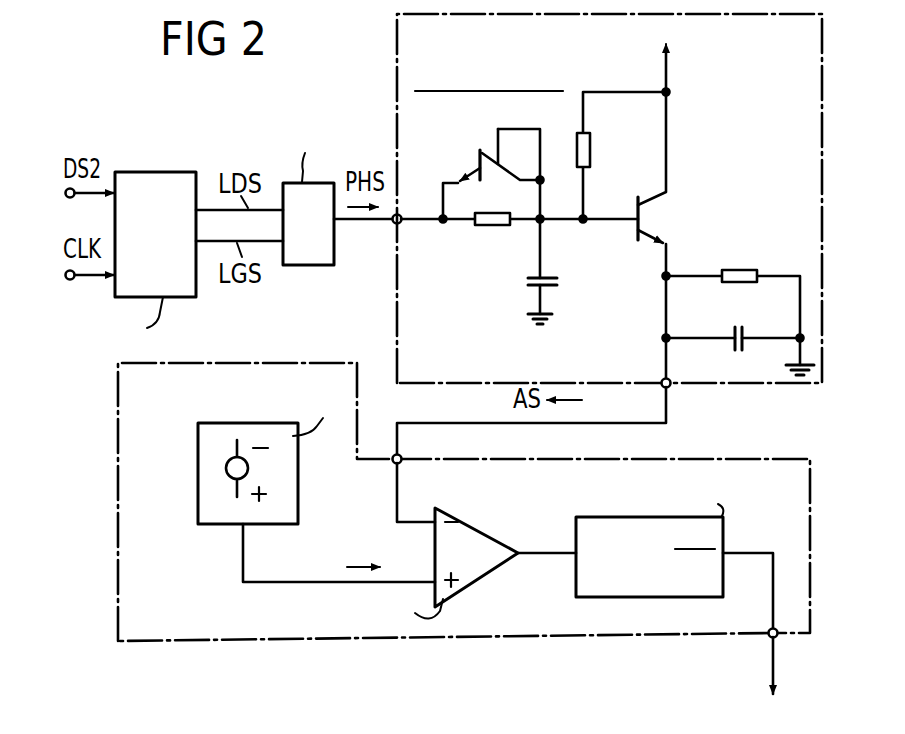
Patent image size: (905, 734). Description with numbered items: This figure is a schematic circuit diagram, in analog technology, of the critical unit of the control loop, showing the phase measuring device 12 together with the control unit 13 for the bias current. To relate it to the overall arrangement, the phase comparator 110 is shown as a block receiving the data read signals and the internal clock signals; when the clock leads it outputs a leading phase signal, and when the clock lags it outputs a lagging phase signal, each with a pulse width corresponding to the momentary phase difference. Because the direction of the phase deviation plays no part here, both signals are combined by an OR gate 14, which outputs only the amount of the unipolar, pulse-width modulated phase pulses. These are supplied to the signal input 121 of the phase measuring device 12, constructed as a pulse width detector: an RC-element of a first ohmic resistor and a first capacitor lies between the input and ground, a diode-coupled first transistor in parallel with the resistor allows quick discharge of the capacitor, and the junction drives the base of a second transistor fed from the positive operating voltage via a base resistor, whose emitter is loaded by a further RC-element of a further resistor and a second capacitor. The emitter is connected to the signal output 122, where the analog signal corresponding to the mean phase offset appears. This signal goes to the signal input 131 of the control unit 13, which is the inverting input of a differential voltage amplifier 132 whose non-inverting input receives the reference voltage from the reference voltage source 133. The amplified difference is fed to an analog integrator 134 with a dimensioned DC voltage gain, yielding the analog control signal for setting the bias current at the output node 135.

The phase measuring device 12 is at (396, 58).
The control unit 13 is at (172, 642).
The OR gate 14 is at (319, 266).
The phase comparator 110 is at (145, 172).
The signal input 121 is at (393, 225).
The signal output 122 is at (665, 378).
The signal input 131 is at (393, 465).
The differential voltage amplifier 132 is at (483, 529).
The reference voltage source 133 is at (206, 527).
The analog integrator 134 is at (576, 597).
The output node (BAS) 135 is at (769, 637).